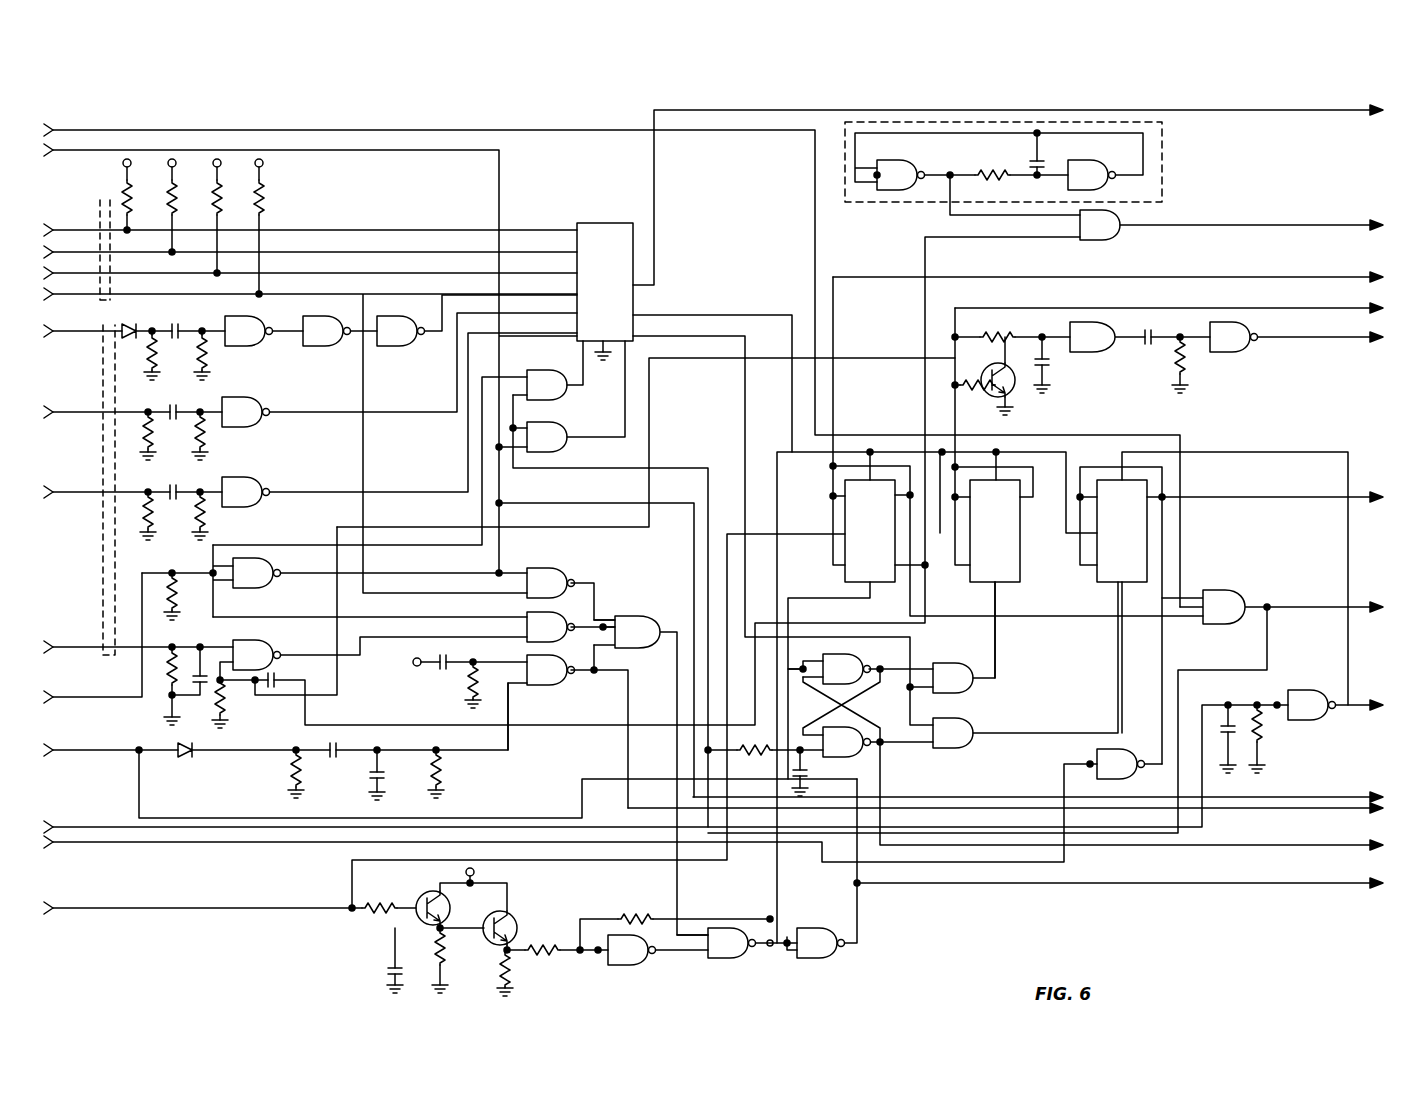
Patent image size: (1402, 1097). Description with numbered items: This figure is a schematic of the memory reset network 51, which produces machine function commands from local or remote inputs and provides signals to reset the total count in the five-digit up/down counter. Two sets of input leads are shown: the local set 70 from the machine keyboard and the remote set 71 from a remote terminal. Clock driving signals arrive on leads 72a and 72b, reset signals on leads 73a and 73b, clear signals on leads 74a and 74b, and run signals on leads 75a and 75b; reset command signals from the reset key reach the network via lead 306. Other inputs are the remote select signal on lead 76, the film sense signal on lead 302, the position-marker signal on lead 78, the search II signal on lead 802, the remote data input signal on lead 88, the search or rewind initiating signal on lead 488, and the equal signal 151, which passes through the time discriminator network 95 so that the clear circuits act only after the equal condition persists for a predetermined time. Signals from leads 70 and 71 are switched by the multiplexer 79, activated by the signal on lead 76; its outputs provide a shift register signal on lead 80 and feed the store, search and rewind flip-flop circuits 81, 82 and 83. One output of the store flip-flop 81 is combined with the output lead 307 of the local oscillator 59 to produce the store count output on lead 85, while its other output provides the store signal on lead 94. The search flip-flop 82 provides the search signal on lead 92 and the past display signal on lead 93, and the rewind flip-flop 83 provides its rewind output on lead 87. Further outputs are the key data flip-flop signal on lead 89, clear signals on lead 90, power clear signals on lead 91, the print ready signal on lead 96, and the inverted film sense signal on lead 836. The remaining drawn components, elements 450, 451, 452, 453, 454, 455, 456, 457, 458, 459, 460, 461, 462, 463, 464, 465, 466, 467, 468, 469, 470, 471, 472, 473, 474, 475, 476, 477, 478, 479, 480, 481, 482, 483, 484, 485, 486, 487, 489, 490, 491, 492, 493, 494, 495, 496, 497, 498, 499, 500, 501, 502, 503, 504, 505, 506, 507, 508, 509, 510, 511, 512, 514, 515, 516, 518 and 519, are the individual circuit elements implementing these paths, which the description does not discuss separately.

The search II signal lead 802 is at (612, 356).
The remote data input lead 88 is at (713, 473).
The clock driving signal lead 72a is at (310, 220).
The reset signal lead 73a is at (310, 245).
The run signal lead 75a is at (310, 266).
The clear signal lead 74a is at (310, 434).
The clock driving signal lead 72b is at (83, 321).
The remote input lead set 71 is at (108, 205).
The local input lead set 70 is at (103, 376).
The resistor 450 is at (143, 192).
The resistor 451 is at (188, 203).
The resistor 452 is at (233, 213).
The resistor 453 is at (264, 200).
The diode 454 is at (140, 318).
The resistor 455 is at (167, 354).
The capacitor 456 is at (183, 318).
The resistor 457 is at (219, 354).
The NAND gate 458 is at (262, 322).
The NAND gate 459 is at (340, 346).
The NAND gate 460 is at (400, 318).
The multiplexer 79 is at (616, 306).
The shift register signal lead 80 is at (1008, 186).
The AND gate 465 is at (553, 394).
The AND gate 466 is at (565, 446).
The reset signal lead 73b is at (95, 401).
The reset command lead 306 is at (83, 420).
The capacitor 462 is at (176, 418).
The resistor 461 is at (164, 435).
The resistor 463 is at (206, 440).
The NAND gate 464 is at (265, 421).
The run signal lead 75b is at (106, 482).
The capacitor 468 is at (178, 496).
The resistor 467 is at (164, 515).
The resistor 469 is at (218, 514).
The NAND gate 470 is at (265, 490).
The NAND gate 471 is at (255, 586).
The resistor 476 is at (176, 606).
The clear signal lead 74b is at (138, 635).
The NAND gate 478 is at (255, 651).
The resistor 477 is at (168, 690).
The resistor 479 is at (225, 712).
The capacitor 480 is at (282, 688).
The remote select signal lead 76 is at (93, 638).
The capacitor 481 is at (447, 668).
The resistor 482 is at (468, 685).
The NAND gate 472 is at (553, 573).
The NAND gate 474 is at (414, 617).
The AND gate 473 is at (635, 615).
The NAND gate 475 is at (572, 676).
The power clear signal lead 91 is at (1005, 820).
The film sense signal lead 302 is at (450, 750).
The diode 483 is at (183, 760).
The resistor 484 is at (290, 775).
The capacitor 485 is at (338, 754).
The capacitor 486 is at (394, 775).
The resistor 487 is at (441, 775).
The search/rewind initiation lead 488 is at (666, 767).
The position marker signal lead 78 is at (570, 816).
The equal signal 151 is at (444, 724).
The resistor 489 is at (383, 893).
The transistor 490 is at (451, 899).
The transistor 491 is at (516, 921).
The capacitor 492 is at (392, 958).
The resistor 493 is at (445, 962).
The resistor 494 is at (510, 975).
The resistor 495 is at (546, 956).
The NAND gate 496 is at (638, 959).
The resistor 497 is at (637, 914).
The NAND gate 498 is at (735, 956).
The NAND gate 499 is at (815, 956).
The clear signal lead 90 is at (1120, 897).
The time discriminator network 95 is at (364, 975).
The resistor 500 is at (764, 763).
The capacitor 501 is at (805, 778).
The NAND gate 502 is at (838, 752).
The key data flip-flop signal lead 89 is at (1131, 808).
The NAND gate 503 is at (848, 668).
The AND gate 504 is at (955, 678).
The AND gate 505 is at (963, 725).
The store flip-flop circuit 81 is at (882, 549).
The search flip-flop circuit 82 is at (1007, 549).
The rewind flip-flop circuit 83 is at (1134, 549).
The rewind output lead 87 is at (1275, 486).
The store signal lead 94 is at (1108, 269).
The search signal lead 92 is at (1169, 301).
The OR gate 507 is at (1240, 588).
The print ready signal lead 96 is at (1329, 594).
The NAND gate 506 is at (1125, 772).
The inverted film sense signal lead 836 is at (1353, 704).
The oscillator circuit 59 is at (1165, 160).
The NAND gate 508 is at (918, 170).
The resistor 509 is at (1021, 161).
The capacitor 510 is at (1044, 158).
The NAND gate 511 is at (1110, 170).
The oscillator output lead 307 is at (948, 212).
The AND gate 512 is at (1105, 241).
The store count output lead 85 is at (1341, 212).
The resistor 514 is at (1003, 340).
The capacitor 519 is at (1049, 366).
The buffer gate 515 is at (1098, 356).
The capacitor 516 is at (1156, 340).
The NAND gate 518 is at (1240, 355).
The past display signal lead 93 is at (1320, 329).
The memory reset network 51 is at (926, 902).